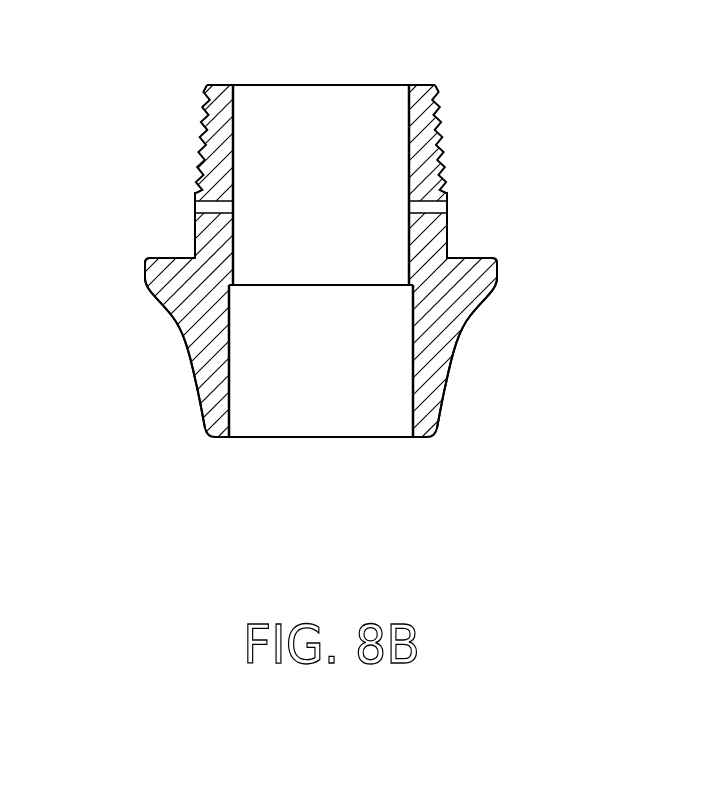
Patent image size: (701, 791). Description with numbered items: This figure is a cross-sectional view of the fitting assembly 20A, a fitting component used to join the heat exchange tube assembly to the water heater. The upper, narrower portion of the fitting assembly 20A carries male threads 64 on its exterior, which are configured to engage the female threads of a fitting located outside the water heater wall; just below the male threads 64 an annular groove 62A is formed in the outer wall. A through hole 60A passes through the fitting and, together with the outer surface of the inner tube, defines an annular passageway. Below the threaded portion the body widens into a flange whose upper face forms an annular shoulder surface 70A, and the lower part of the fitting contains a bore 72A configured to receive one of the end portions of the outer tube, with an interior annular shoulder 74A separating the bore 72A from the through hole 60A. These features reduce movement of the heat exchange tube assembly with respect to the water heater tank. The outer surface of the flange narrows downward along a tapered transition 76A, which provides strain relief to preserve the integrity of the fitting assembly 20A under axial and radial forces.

The fitting assembly 20A is at (592, 80).
The through hole 60A is at (236, 126).
The male threads 64 is at (440, 126).
The annular groove 62A is at (442, 207).
The annular shoulder surface 70A is at (182, 258).
The bore 72A is at (230, 378).
The interior annular shoulder 74A is at (412, 286).
The tapered transition 76A is at (470, 317).